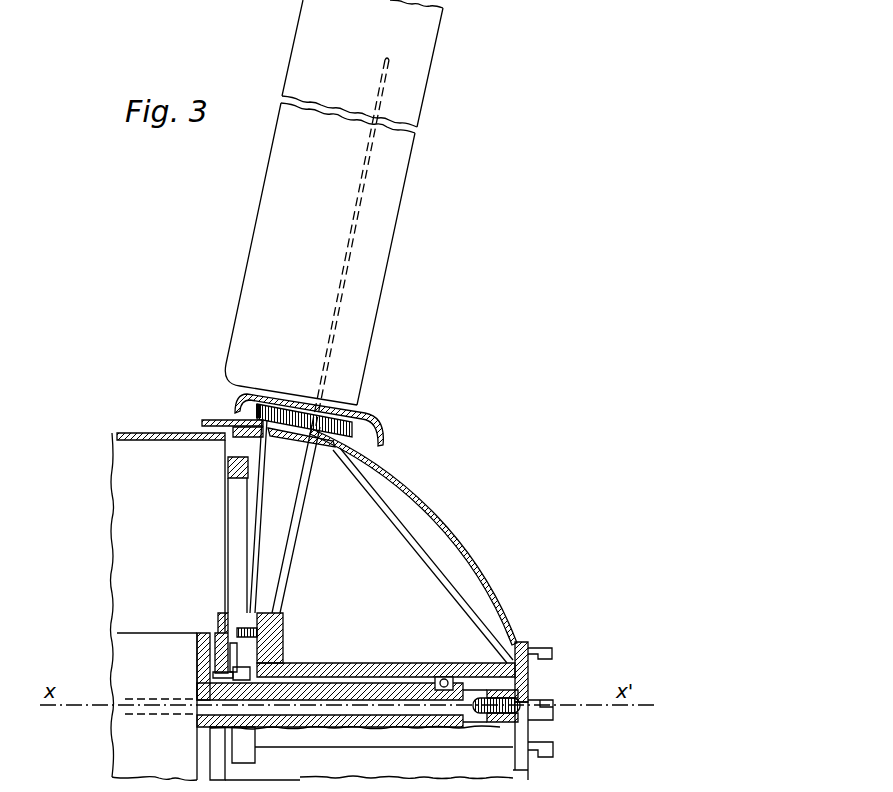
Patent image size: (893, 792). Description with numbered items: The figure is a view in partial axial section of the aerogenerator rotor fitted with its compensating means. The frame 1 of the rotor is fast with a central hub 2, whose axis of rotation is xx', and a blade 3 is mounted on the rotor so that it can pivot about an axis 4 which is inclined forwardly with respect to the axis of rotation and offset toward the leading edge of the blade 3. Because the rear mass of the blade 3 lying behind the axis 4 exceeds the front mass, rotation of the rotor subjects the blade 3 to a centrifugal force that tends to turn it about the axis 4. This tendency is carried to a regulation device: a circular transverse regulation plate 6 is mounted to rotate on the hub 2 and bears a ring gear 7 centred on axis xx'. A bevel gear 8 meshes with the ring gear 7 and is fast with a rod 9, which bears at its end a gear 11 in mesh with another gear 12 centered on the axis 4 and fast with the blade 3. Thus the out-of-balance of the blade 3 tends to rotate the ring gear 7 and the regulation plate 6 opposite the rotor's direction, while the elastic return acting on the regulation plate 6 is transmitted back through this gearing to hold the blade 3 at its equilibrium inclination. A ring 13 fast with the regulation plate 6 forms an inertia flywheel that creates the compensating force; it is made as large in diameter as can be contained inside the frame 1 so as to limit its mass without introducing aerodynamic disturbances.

The frame 1 is at (352, 457).
The central hub 2 is at (381, 668).
The blade 3 is at (405, 214).
The axis 4 is at (342, 300).
The regulation plate 6 is at (218, 647).
The ring gear 7 is at (223, 630).
The bevel gear 8 is at (254, 632).
The rod 9 is at (257, 492).
The gear 11 is at (258, 413).
The gear 12 is at (325, 432).
The ring 13 is at (235, 468).